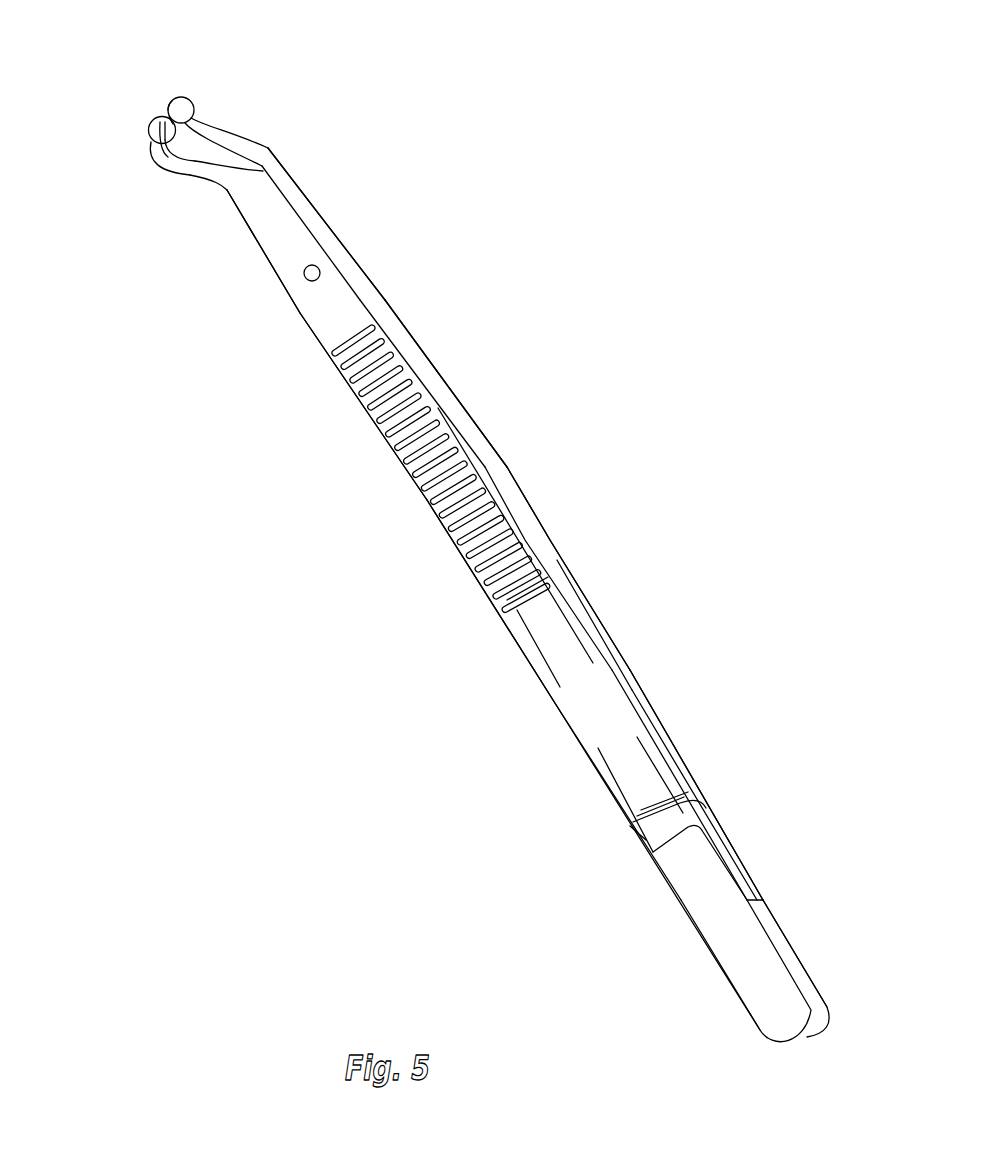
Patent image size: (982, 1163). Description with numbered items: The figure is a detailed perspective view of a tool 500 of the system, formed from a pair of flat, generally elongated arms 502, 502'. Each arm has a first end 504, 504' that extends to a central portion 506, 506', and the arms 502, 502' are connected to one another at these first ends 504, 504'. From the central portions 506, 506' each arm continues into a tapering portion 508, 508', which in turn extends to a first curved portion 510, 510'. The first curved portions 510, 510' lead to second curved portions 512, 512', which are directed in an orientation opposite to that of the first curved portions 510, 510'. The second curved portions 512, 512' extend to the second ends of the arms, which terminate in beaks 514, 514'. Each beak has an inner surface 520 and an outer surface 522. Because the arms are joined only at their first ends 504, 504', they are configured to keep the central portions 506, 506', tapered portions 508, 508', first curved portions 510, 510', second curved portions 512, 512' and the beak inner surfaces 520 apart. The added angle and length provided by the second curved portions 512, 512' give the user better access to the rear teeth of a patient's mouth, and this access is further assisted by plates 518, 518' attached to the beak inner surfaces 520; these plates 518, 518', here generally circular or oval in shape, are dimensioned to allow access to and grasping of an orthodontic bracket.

The tool 500 is at (307, 683).
The arm 502 is at (554, 700).
The arm 502' is at (687, 744).
The first end 504 is at (720, 891).
The first end 504' is at (831, 952).
The central portion 506 is at (441, 489).
The central portion 506' is at (541, 549).
The tapering portion 508 is at (323, 382).
The tapering portion 508' is at (432, 329).
The first curved portion 510 is at (211, 251).
The first curved portion 510' is at (323, 195).
The second curved portion 512 is at (112, 156).
The second curved portion 512' is at (235, 112).
The beak 514 is at (97, 118).
The beak 514' is at (127, 71).
The plate 518 is at (102, 123).
The plate 518' is at (148, 66).
The inner surface 520 is at (169, 114).
The outer surface 522 is at (200, 174).